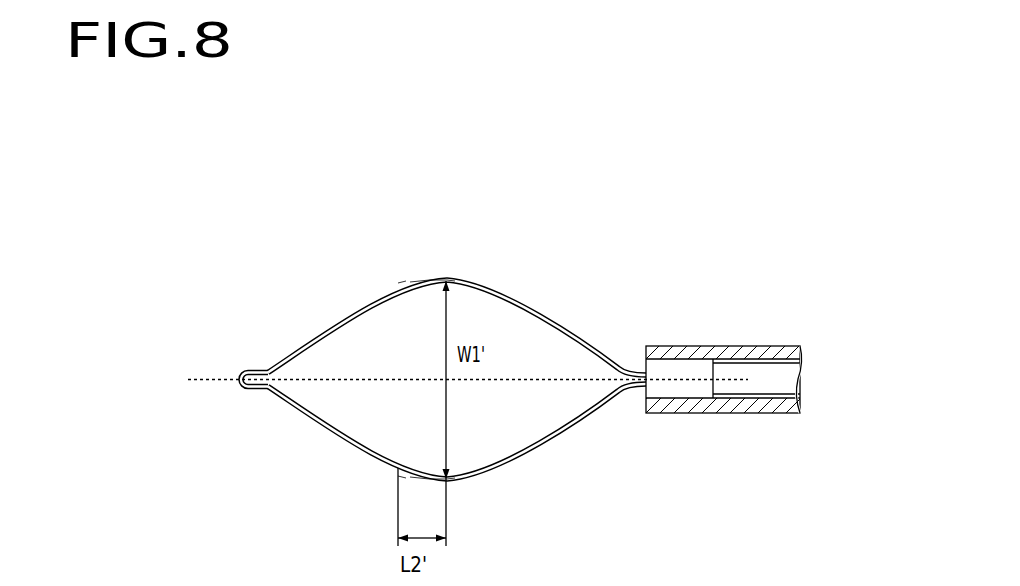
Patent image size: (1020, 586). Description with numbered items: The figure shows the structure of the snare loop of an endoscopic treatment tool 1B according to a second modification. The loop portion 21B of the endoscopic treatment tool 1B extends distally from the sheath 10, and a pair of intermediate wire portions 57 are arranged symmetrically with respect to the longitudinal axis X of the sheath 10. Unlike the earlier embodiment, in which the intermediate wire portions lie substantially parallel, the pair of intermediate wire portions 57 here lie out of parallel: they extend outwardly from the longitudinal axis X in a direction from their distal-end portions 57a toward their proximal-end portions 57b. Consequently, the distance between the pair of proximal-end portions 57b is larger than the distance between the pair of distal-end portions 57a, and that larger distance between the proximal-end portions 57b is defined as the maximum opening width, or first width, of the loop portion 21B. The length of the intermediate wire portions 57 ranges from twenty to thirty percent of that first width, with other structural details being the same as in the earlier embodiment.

The endoscopic treatment tool 1B is at (528, 357).
The loop portion 21B is at (449, 357).
The sheath 10 is at (692, 352).
The intermediate wire portions 57 is at (425, 278).
The distal-end portions 57a is at (402, 282).
The proximal-end portions 57b is at (452, 278).
The longitudinal axis X is at (202, 380).